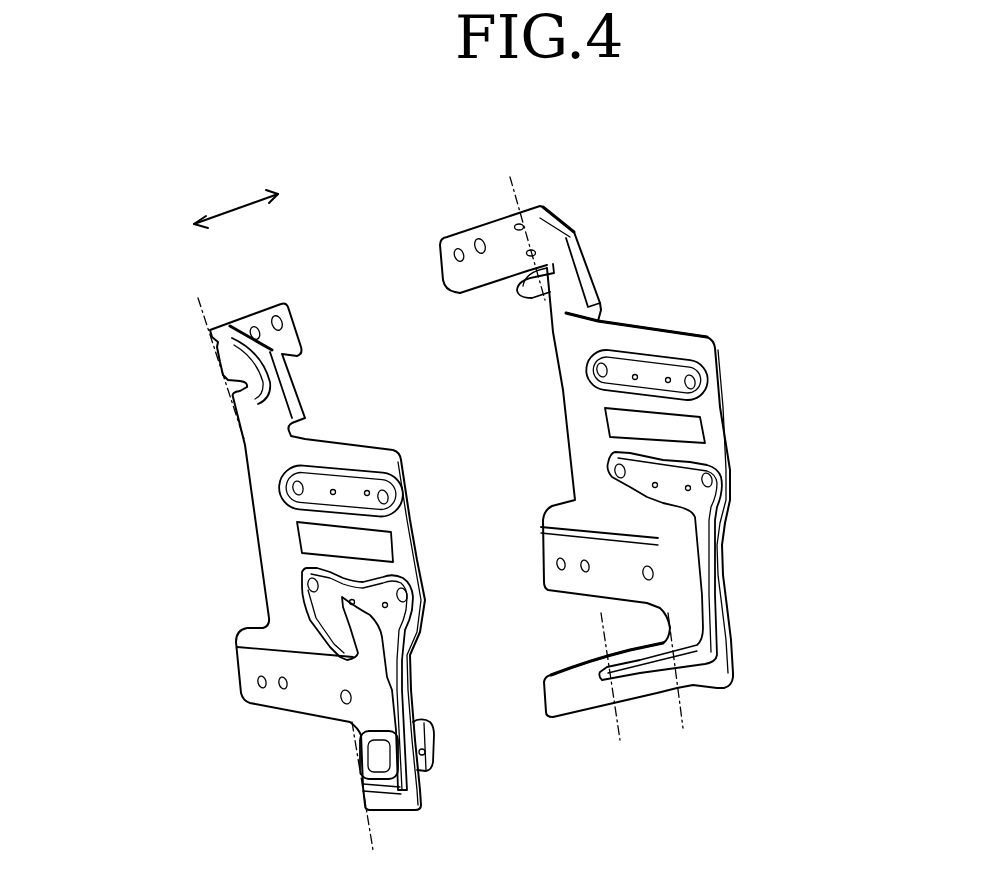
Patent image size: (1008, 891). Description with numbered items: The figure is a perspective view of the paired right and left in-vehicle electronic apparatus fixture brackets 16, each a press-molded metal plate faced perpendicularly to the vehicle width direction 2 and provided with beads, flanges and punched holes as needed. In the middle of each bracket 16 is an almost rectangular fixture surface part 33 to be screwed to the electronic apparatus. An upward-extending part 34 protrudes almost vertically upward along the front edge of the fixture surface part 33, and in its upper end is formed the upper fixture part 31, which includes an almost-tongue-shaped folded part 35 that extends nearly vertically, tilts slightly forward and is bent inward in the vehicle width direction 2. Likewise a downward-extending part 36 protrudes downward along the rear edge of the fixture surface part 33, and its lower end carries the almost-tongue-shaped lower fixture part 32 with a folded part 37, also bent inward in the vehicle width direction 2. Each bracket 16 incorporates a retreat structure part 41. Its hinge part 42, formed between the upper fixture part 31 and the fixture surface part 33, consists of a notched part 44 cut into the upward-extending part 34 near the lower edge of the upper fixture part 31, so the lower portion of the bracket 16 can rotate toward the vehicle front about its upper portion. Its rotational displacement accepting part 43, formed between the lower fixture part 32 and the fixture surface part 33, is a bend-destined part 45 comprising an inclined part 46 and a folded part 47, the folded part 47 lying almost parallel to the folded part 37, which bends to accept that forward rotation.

The vehicle width direction 2 is at (235, 213).
The in-vehicle electronic apparatus fixture bracket 16 is at (187, 524).
The upper fixture part 31 is at (296, 323).
The lower fixture part 32 is at (430, 757).
The fixture surface part 33 is at (278, 553).
The upward-extending part 34 is at (258, 417).
The folded part 35 is at (197, 294).
The downward-extending part 36 is at (433, 792).
The folded part 37 is at (373, 843).
The retreat structure part 41 is at (222, 387).
The hinge part 42 is at (393, 334).
The rotational displacement accepting part 43 is at (640, 713).
The notched part 44 is at (393, 334).
The bend-destined part 45 is at (640, 713).
The inclined part 46 is at (640, 698).
The folded part 47 is at (620, 740).